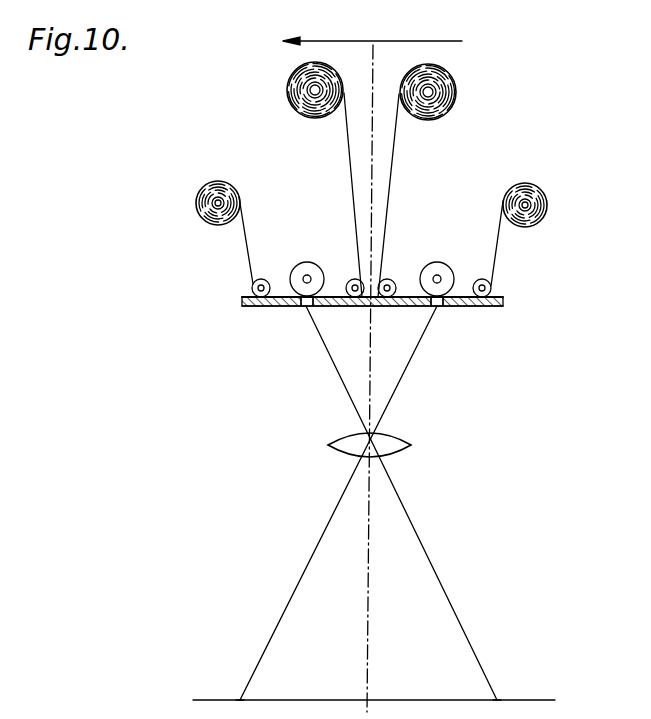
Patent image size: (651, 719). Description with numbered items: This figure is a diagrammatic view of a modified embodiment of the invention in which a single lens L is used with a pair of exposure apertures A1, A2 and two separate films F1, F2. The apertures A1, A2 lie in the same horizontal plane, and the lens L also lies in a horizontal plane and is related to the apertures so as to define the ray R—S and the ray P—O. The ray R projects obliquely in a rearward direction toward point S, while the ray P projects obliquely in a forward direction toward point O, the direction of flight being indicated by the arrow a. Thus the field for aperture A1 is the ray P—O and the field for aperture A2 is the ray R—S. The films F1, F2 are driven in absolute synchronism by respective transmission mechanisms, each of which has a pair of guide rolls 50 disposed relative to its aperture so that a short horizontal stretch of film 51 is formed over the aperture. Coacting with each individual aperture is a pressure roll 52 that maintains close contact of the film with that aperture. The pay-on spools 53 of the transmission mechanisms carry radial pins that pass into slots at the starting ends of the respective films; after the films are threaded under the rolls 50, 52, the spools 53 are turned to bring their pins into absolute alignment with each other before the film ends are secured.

The pay-on spool 53 is at (288, 93).
The guide roll 50 is at (267, 278).
The pressure roll 52 is at (307, 262).
The short horizontal stretch of film 51 is at (276, 307).
The exposure aperture A1 is at (303, 306).
The exposure aperture A2 is at (440, 306).
The film F1 is at (355, 180).
The film F2 is at (393, 178).
The ray P is at (333, 338).
The ray R is at (424, 335).
The lens L is at (355, 450).
The ray end point S is at (234, 690).
The ray end point O is at (504, 691).
The arrow indicating direction of flight a is at (372, 30).